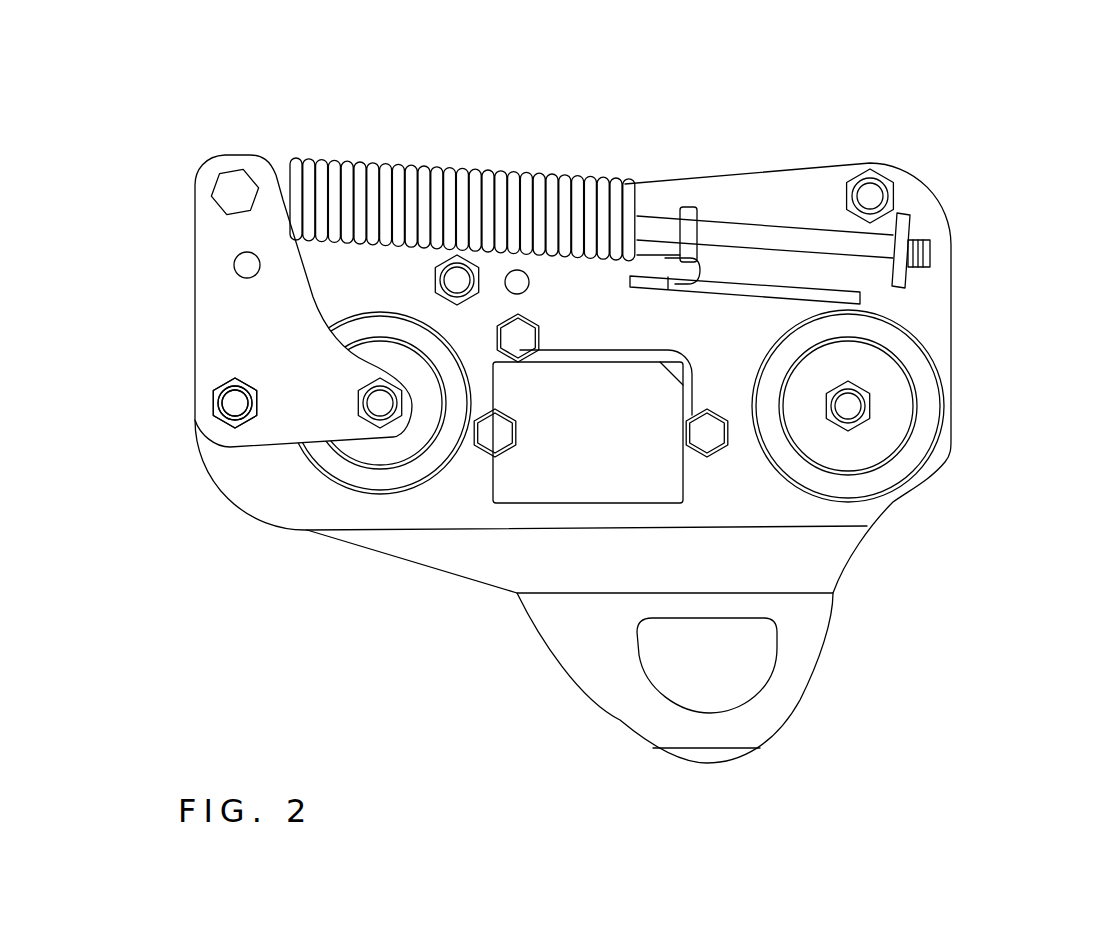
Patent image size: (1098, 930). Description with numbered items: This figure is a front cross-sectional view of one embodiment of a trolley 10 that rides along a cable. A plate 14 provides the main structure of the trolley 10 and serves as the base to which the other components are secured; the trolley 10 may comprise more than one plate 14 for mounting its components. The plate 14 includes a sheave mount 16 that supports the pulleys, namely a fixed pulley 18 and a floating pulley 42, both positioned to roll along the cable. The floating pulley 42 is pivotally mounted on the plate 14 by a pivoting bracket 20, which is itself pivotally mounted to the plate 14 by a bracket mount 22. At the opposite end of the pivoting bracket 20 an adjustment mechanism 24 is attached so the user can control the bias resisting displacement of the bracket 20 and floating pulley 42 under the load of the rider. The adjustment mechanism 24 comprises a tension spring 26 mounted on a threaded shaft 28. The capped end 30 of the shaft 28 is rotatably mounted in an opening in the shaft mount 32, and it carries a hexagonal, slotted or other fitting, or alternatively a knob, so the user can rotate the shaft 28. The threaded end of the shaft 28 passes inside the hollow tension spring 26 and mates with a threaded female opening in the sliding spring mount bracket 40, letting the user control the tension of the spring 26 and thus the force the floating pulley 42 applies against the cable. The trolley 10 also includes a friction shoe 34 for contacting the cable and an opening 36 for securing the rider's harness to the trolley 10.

The trolley 10 is at (650, 154).
The plate 14 is at (800, 565).
The sheave mount 16 is at (368, 418).
The fixed pulley 18 is at (900, 483).
The pivoting bracket 20 is at (227, 450).
The bracket mount 22 is at (213, 393).
The adjustment mechanism 24 is at (470, 150).
The tension spring 26 is at (353, 167).
The threaded shaft 28 is at (900, 213).
The capped end 30 is at (930, 253).
The shaft mount 32 is at (900, 287).
The friction shoe 34 is at (573, 447).
The opening 36 is at (690, 680).
The sliding spring mount bracket 40 is at (690, 212).
The floating pulley 42 is at (368, 497).